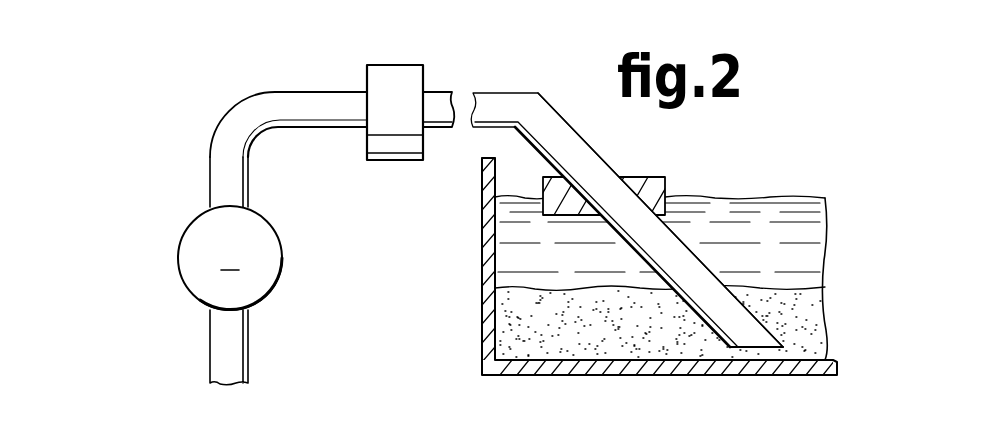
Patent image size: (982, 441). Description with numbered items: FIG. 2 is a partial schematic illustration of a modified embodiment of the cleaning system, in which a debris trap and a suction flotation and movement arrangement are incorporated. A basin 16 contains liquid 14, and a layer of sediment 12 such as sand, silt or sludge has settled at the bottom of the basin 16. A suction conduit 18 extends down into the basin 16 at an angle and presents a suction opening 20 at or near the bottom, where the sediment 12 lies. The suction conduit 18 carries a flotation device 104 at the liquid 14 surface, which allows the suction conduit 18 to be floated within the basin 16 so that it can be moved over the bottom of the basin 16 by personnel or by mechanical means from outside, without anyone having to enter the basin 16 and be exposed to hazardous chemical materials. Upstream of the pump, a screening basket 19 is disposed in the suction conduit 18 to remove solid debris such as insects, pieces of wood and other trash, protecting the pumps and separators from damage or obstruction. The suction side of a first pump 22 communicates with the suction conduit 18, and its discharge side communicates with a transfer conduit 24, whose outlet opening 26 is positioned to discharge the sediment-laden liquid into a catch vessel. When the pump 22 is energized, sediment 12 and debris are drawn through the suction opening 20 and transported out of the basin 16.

The sediment 12 is at (807, 347).
The liquid 14 is at (779, 223).
The basin 16 is at (482, 290).
The suction conduit 18 is at (556, 112).
The screening basket 19 is at (367, 66).
The suction opening 20 is at (752, 362).
The first pump 22 is at (178, 261).
The transfer conduit 24 is at (210, 358).
The flotation device 104 is at (665, 178).
The outlet opening 26 is at (841, 436).